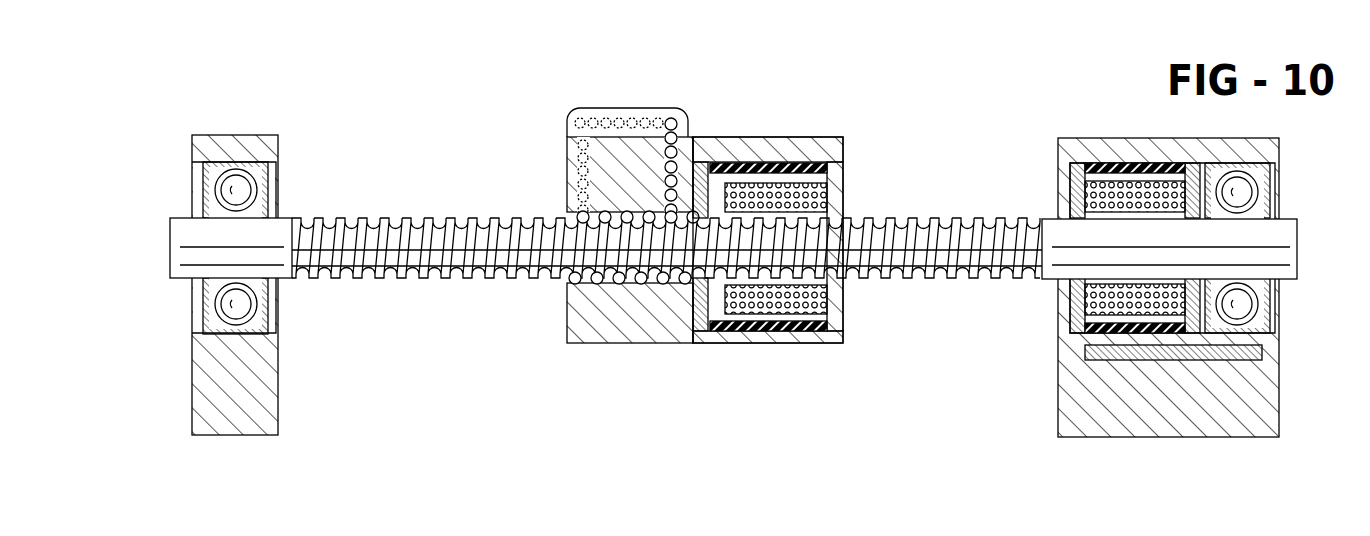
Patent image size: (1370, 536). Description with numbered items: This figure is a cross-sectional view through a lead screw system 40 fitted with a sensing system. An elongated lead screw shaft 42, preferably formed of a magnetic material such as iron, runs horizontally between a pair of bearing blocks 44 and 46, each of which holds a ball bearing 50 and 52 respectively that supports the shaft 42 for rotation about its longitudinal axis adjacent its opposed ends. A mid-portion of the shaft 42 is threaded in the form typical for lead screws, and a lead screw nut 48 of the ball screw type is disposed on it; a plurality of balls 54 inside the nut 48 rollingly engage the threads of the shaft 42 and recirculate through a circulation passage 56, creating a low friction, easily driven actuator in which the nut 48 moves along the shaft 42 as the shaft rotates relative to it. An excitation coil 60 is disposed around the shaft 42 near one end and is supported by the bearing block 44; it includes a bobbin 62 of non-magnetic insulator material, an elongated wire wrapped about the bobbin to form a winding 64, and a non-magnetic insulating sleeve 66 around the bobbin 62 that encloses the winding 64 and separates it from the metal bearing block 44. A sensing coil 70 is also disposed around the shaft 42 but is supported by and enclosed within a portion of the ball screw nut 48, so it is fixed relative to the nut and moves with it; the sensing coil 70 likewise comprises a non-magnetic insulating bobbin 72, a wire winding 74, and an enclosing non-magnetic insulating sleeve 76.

The lead screw system 40 is at (861, 113).
The lead screw shaft 42 is at (953, 233).
The bearing block 44 is at (1056, 378).
The bearing block 46 is at (286, 357).
The lead screw nut 48 is at (606, 346).
The ball bearing 50 is at (1262, 302).
The ball bearing 52 is at (263, 300).
The balls 54 is at (684, 112).
The circulation passage 56 is at (592, 112).
The excitation coil 60 is at (1080, 192).
The bobbin 62 is at (1068, 292).
The winding 64 is at (1128, 185).
The insulating sleeve 66 is at (1105, 165).
The sensing coil 70 is at (850, 191).
The bobbin 72 is at (847, 298).
The winding 74 is at (770, 325).
The insulating sleeve 76 is at (768, 165).